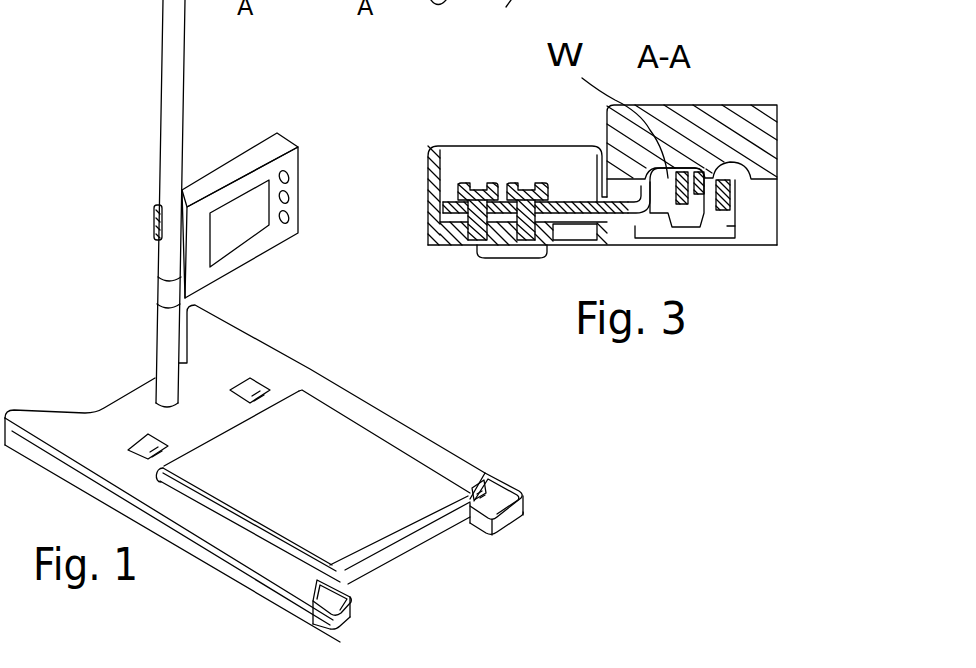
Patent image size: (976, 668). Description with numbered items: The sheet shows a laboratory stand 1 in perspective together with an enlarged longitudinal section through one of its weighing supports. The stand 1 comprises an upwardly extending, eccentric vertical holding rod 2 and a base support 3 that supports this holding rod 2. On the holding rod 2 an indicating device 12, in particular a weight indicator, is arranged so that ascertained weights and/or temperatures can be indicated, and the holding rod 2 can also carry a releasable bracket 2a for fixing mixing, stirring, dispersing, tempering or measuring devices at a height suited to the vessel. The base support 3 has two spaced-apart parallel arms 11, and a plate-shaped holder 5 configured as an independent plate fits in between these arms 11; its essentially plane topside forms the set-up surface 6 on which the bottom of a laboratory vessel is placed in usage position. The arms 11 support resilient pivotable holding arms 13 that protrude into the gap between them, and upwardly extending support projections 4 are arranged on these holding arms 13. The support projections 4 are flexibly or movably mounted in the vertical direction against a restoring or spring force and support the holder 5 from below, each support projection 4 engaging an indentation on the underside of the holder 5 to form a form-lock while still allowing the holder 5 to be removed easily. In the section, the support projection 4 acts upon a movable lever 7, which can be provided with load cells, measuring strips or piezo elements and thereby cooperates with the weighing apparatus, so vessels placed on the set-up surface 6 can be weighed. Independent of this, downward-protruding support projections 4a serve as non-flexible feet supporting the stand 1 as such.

In FIG. 1, the laboratory stand 1 is at (141, 129).
In FIG. 1, the holding rod 2 is at (173, 78).
In FIG. 1, the releasable bracket 2a is at (155, 223).
In FIG. 1, the indicating device 12 is at (245, 187).
In FIG. 1, the base support 3 is at (390, 397).
In FIG. 3, the base support 3 is at (452, 253).
In FIG. 1, the holder 5 is at (370, 453).
In FIG. 3, the holder 5 is at (741, 108).
In FIG. 1, the set-up surface 6 is at (382, 493).
In FIG. 3, the set-up surface 6 is at (720, 100).
In FIG. 1, the arms 11 is at (222, 540).
In FIG. 3, the arms 11 is at (502, 146).
In FIG. 3, the support projection 4 is at (751, 179).
In FIG. 3, the support projections for set-up purposes 4a is at (511, 254).
In FIG. 3, the lever 7 is at (656, 200).
In FIG. 3, the holding arms 13 is at (623, 214).